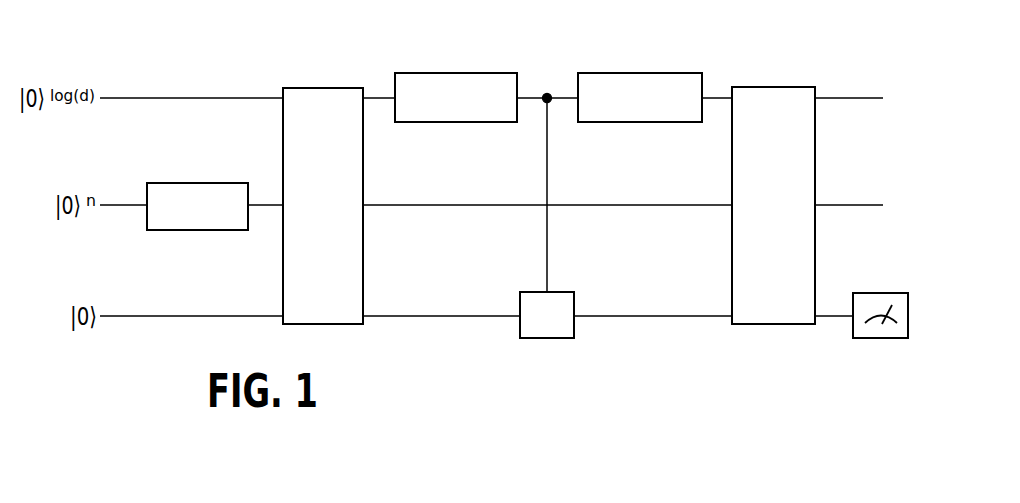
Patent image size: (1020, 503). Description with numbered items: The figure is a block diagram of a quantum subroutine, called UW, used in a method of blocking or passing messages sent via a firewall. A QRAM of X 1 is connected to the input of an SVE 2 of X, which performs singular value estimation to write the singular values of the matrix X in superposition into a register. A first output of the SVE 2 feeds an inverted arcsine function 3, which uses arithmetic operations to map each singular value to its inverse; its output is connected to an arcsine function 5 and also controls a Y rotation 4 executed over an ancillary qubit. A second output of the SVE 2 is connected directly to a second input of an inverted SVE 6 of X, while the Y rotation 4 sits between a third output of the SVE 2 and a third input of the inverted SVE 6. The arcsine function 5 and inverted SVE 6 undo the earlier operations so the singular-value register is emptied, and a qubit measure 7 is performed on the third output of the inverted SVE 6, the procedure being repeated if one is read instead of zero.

The QRAM of X 1 is at (167, 183).
The SVE of X 2 is at (308, 88).
The inverted arcsine function 3 is at (425, 73).
The Y rotation 4 is at (538, 340).
The arcsine function 5 is at (668, 73).
The inverted SVE of X 6 is at (790, 87).
The qubit measure 7 is at (887, 340).